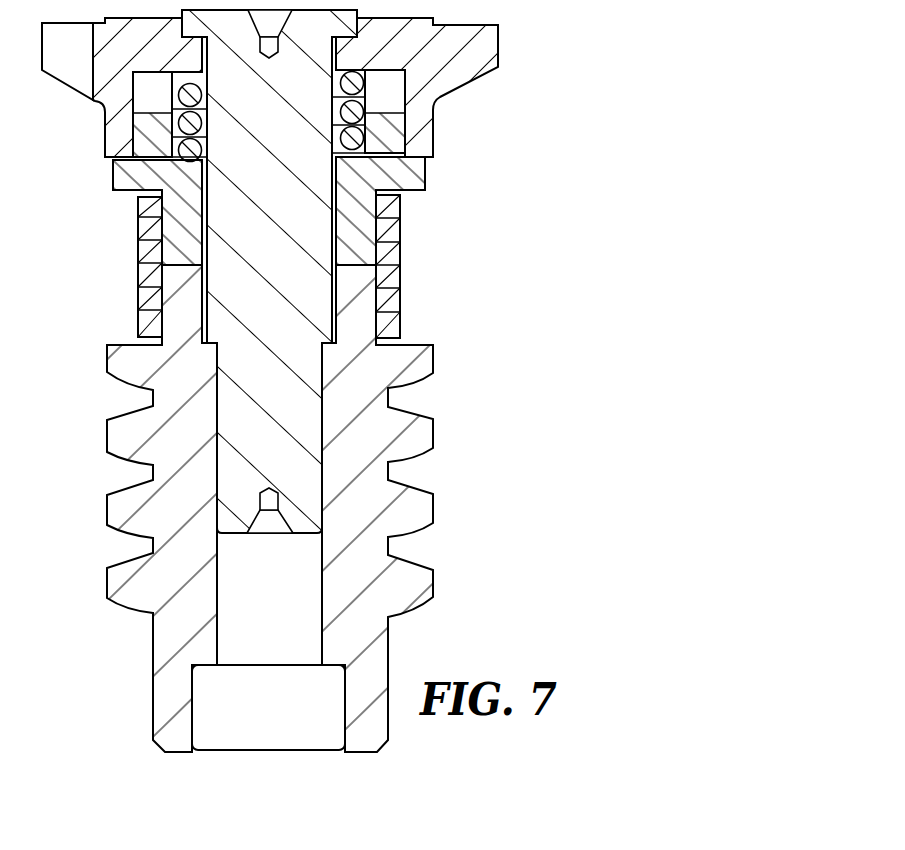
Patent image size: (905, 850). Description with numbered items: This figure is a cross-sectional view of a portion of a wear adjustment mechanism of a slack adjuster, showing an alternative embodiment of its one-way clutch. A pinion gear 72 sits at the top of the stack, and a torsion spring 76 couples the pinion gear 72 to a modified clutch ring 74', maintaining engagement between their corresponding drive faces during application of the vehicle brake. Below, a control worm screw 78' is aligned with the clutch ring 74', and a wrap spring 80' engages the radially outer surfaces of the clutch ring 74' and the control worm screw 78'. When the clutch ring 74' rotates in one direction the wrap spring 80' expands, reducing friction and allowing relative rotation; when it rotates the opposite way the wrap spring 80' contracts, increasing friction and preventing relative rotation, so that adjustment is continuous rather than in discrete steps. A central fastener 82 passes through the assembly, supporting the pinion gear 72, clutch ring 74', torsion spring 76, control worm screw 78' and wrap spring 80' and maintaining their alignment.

The pinion gear 72 is at (470, 56).
The modified clutch ring 74' is at (408, 266).
The torsion spring 76 is at (190, 128).
The control worm screw 78' is at (245, 508).
The wrap spring 80' is at (112, 267).
The fastener 82 is at (235, 442).